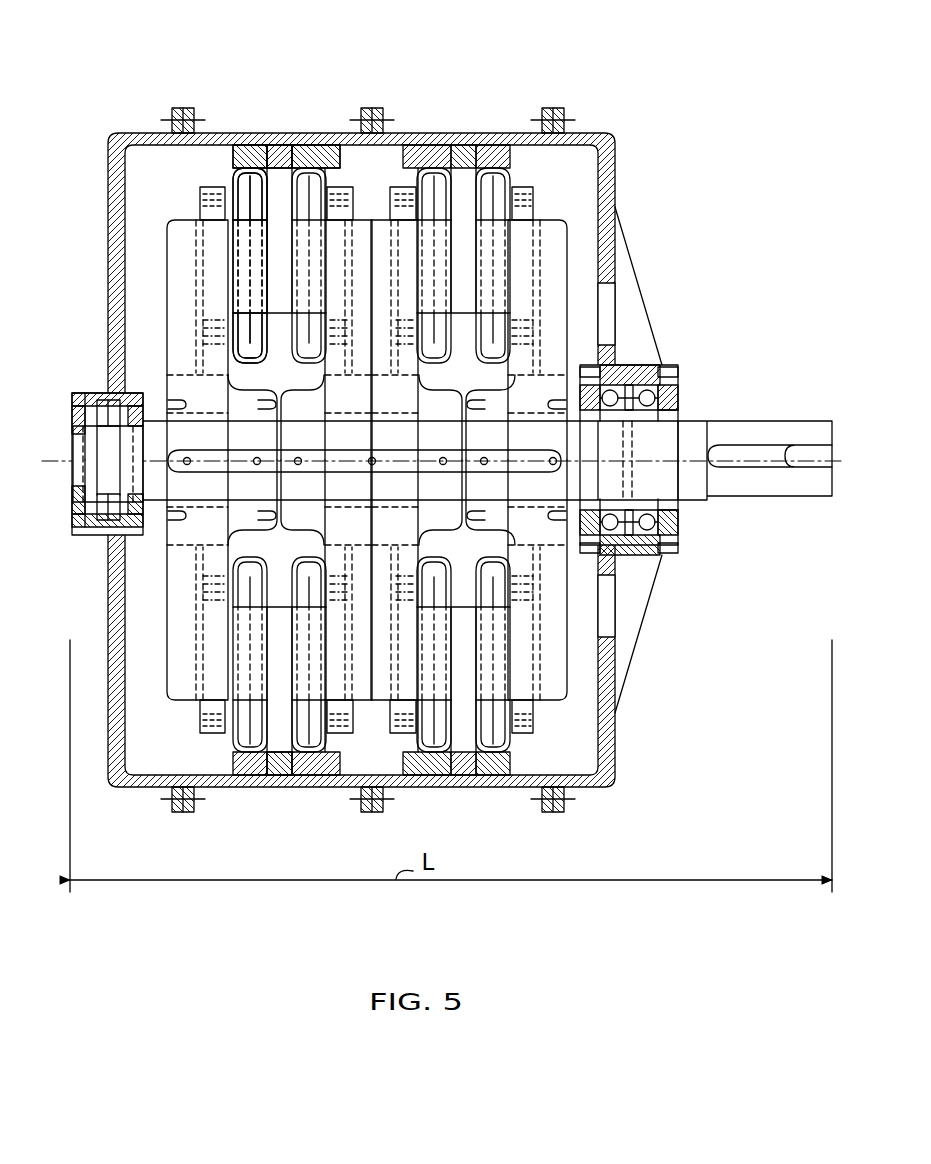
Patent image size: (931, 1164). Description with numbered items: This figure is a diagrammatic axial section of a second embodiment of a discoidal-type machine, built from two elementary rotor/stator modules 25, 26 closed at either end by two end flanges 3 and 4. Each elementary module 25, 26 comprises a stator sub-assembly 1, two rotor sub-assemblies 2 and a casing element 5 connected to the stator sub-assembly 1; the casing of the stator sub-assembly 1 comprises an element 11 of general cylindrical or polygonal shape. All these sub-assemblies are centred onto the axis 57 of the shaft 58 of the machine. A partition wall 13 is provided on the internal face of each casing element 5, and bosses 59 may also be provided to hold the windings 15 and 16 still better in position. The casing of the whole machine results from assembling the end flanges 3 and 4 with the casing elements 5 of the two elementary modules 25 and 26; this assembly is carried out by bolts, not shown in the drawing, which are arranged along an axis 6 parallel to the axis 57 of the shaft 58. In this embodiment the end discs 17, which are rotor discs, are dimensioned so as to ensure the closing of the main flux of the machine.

The stator sub-assembly 1 is at (289, 122).
The rotor sub-assembly 2 is at (368, 455).
The end flange 3 is at (108, 258).
The end flange 4 is at (608, 182).
The casing element 5 is at (273, 792).
The axis 6 is at (569, 802).
The element 11 is at (246, 135).
The partition wall 13 is at (268, 140).
The winding 15 is at (217, 257).
The winding 16 is at (335, 178).
The end disc 17 is at (160, 659).
The elementary rotor/stator module 25 is at (313, 423).
The elementary rotor/stator module 26 is at (470, 122).
The axis 57 is at (57, 461).
The shaft 58 is at (693, 432).
The boss 59 is at (403, 140).